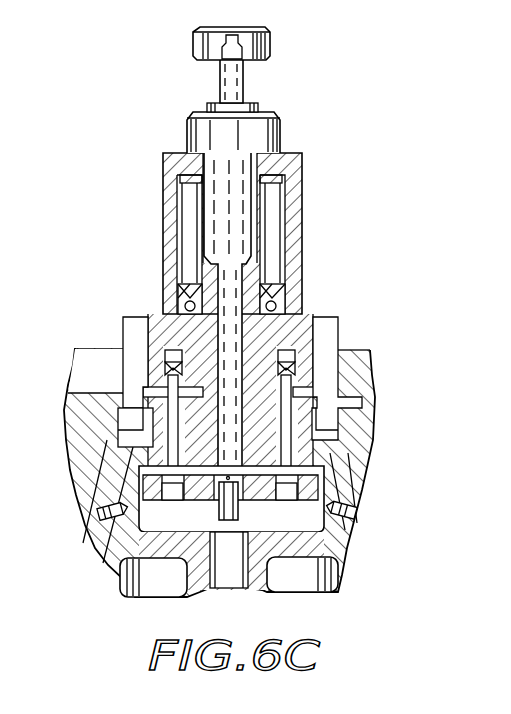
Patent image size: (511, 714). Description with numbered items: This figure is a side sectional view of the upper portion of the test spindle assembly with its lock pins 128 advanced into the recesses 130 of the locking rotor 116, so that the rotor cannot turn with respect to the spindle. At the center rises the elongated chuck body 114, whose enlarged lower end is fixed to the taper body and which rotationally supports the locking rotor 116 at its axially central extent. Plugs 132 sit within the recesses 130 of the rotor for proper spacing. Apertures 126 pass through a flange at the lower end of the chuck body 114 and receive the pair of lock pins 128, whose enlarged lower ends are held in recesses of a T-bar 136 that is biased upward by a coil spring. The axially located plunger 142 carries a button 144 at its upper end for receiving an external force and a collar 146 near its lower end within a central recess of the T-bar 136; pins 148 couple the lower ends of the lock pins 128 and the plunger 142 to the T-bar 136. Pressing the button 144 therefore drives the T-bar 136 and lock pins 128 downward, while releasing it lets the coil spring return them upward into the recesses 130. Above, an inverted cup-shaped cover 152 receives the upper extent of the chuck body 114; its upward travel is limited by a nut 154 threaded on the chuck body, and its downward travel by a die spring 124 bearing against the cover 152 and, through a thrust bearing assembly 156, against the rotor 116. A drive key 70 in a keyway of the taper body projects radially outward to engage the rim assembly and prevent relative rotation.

The drive key 70 is at (343, 474).
The chuck body 114 is at (258, 246).
The locking rotor 116 is at (313, 338).
The die spring 124 is at (283, 292).
The apertures 126 is at (172, 427).
The lock pins 128 is at (168, 408).
The recesses 130 is at (160, 384).
The plugs 132 is at (150, 350).
The T-bar 136 is at (160, 500).
The plunger 142 is at (220, 72).
The button 144 is at (270, 42).
The collar 146 is at (244, 500).
The pins 148 is at (307, 502).
The cover 152 is at (302, 160).
The nut 154 is at (280, 128).
The thrust bearing assembly 156 is at (285, 302).